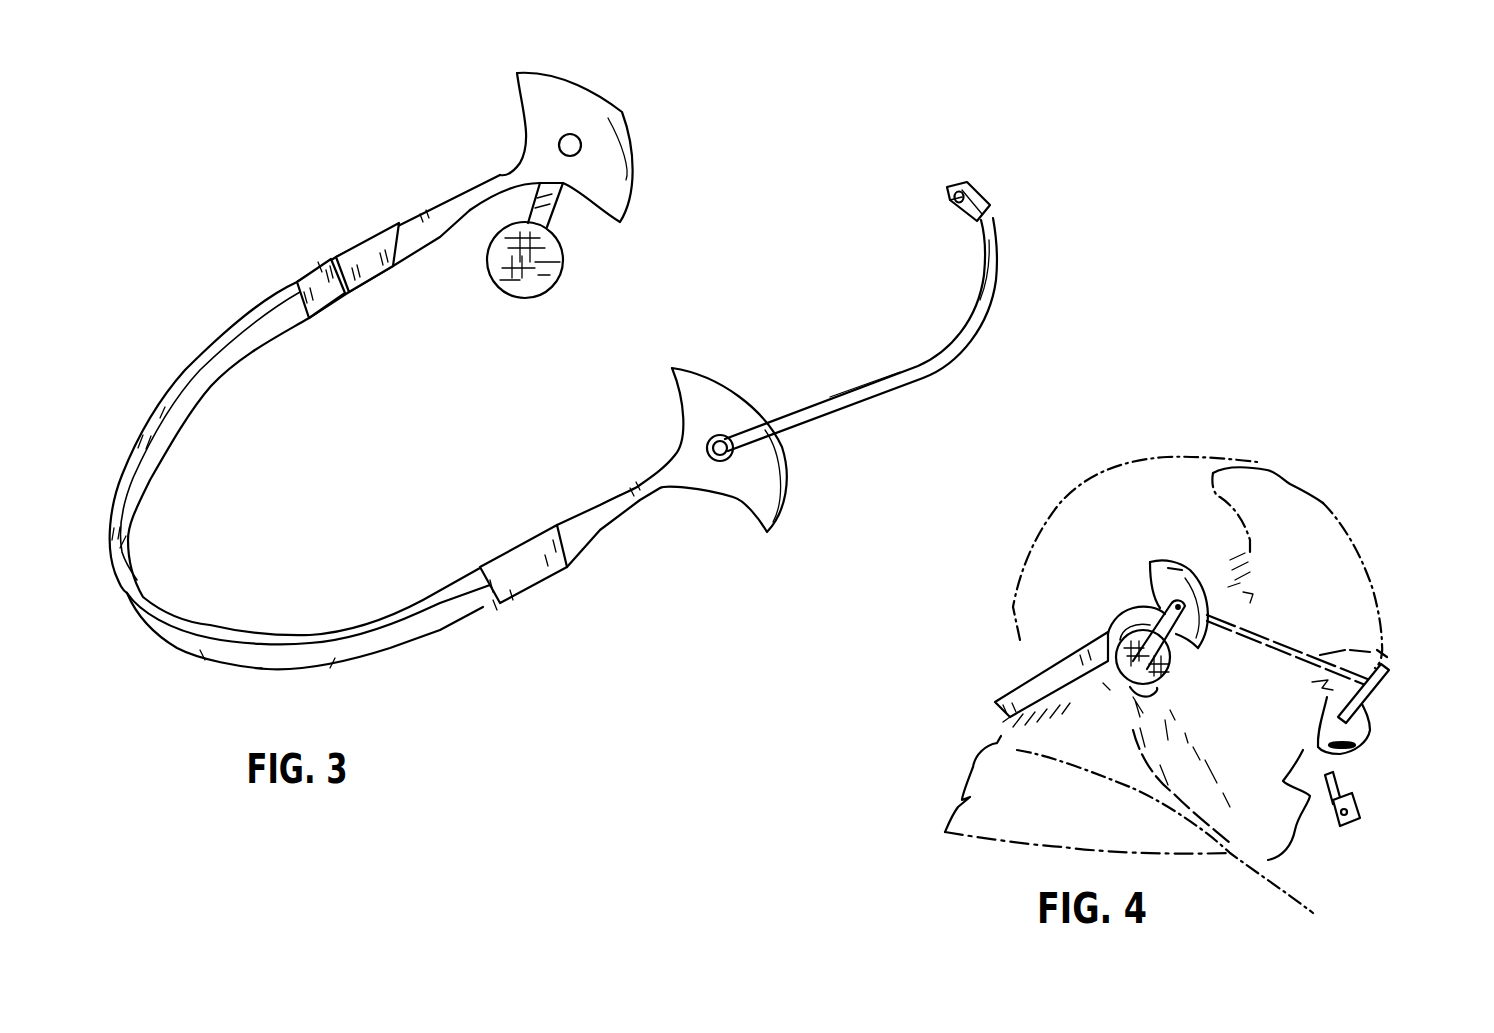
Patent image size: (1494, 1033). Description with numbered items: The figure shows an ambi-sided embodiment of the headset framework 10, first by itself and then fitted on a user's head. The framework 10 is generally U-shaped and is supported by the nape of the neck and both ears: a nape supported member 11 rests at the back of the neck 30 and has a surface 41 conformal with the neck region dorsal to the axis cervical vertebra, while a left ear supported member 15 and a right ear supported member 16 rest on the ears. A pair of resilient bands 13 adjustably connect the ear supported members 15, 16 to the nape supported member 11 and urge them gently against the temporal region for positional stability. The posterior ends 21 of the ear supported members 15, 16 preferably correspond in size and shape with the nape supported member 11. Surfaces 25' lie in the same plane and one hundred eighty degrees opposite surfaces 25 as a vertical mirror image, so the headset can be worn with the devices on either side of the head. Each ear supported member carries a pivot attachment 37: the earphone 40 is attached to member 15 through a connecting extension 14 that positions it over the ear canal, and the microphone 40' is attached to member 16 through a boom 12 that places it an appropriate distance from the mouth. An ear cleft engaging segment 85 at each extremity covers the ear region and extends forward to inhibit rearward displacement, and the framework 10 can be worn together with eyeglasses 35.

In FIG. 3, the headset framework 10 is at (388, 493).
In FIG. 4, the headset framework 10 is at (905, 693).
In FIG. 3, the nape supported member 11 is at (150, 445).
In FIG. 4, the nape supported member 11 is at (1023, 690).
In FIG. 3, the boom 12 is at (995, 306).
In FIG. 3, the resilient band 13 is at (320, 296).
In FIG. 3, the connecting extension 14 is at (553, 223).
In FIG. 4, the connecting extension 14 is at (1152, 617).
In FIG. 3, the left ear supported member 15 is at (363, 263).
In FIG. 3, the right ear supported member 16 is at (537, 577).
In FIG. 3, the posterior end 21 is at (318, 264).
In FIG. 3, the surface 25 is at (672, 486).
In FIG. 3, the surface 25' is at (598, 463).
In FIG. 4, the back of the neck 30 is at (1007, 721).
In FIG. 4, the eyeglasses 35 is at (1283, 637).
In FIG. 3, the pivot attachment 37 is at (577, 140).
In FIG. 3, the earphone 40 is at (525, 300).
In FIG. 4, the earphone 40 is at (1171, 679).
In FIG. 3, the microphone 40' is at (1008, 179).
In FIG. 4, the microphone 40' is at (1394, 799).
In FIG. 3, the surface 41 is at (175, 642).
In FIG. 4, the ear cleft engaging segment 85 is at (1177, 568).